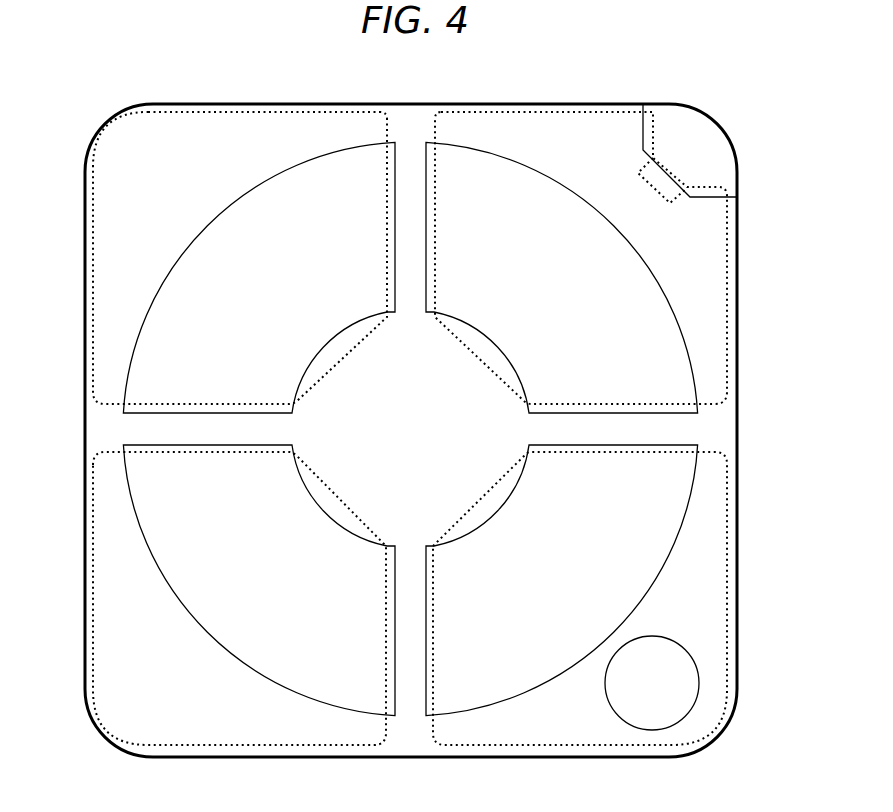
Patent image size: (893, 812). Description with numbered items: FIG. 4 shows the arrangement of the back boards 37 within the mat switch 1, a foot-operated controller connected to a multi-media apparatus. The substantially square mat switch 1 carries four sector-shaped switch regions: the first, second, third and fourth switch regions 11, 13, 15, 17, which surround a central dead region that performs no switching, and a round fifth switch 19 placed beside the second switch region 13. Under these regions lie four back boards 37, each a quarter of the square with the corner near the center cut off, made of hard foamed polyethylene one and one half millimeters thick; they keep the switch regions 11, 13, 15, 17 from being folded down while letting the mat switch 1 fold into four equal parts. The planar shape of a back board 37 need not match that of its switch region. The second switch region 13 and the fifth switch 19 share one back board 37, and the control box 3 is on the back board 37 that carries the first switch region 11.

The mat switch 1 is at (722, 509).
The control box 3 is at (724, 128).
The back boards 37 is at (82, 274).
The first switch region 11 is at (554, 352).
The second switch region 13 is at (554, 613).
The third switch region 15 is at (237, 613).
The fourth switch region 17 is at (237, 352).
The fifth switch 19 is at (666, 717).